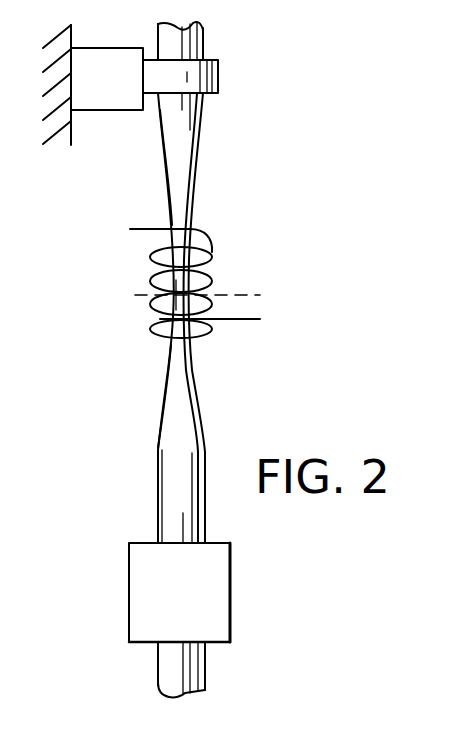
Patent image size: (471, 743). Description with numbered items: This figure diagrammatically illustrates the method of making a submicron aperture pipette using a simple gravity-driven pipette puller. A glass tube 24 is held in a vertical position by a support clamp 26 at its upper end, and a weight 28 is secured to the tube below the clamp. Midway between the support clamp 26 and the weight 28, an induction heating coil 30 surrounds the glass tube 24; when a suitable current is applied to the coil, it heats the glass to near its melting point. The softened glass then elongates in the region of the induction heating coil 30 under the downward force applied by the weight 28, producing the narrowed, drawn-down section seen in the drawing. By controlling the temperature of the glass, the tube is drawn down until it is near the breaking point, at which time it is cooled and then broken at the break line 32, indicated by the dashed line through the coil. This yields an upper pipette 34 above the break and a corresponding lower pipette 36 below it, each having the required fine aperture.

The glass tube 24 is at (206, 130).
The support clamp 26 is at (220, 78).
The weight 28 is at (230, 616).
The induction heating coil 30 is at (210, 239).
The break line 32 is at (126, 297).
The upper pipette 34 is at (168, 180).
The lower twisted portion of wire 36 is at (170, 447).